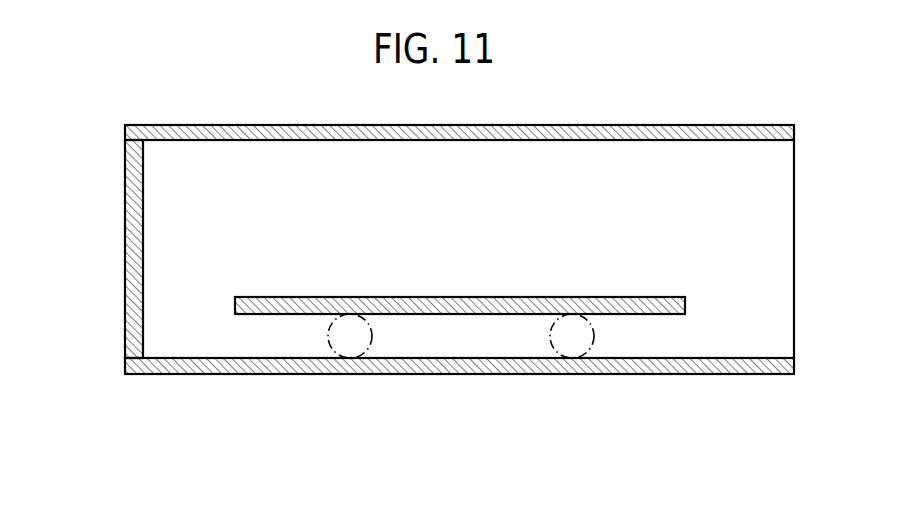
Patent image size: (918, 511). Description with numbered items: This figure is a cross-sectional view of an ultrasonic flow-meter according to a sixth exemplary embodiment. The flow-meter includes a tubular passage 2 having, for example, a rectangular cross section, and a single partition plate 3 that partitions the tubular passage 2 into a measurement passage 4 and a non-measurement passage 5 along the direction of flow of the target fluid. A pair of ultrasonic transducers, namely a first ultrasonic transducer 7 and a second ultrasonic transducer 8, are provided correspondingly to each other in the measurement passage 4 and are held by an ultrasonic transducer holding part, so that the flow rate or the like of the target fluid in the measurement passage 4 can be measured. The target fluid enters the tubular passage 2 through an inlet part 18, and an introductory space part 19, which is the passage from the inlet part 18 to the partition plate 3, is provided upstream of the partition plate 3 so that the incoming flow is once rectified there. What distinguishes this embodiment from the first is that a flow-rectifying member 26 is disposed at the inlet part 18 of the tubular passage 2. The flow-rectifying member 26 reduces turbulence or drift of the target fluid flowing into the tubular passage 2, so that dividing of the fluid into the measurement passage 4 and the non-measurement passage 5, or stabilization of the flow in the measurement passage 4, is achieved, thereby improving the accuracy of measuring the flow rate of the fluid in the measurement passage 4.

The tubular passage 2 is at (175, 320).
The partition plate 3 is at (480, 307).
The measurement passage 4 is at (660, 337).
The non-measurement passage 5 is at (598, 217).
The first ultrasonic transducer 7 is at (348, 342).
The second ultrasonic transducer 8 is at (575, 340).
The inlet part 18 is at (125, 212).
The introductory space part 19 is at (213, 317).
The flow-rectifying member 26 is at (125, 292).